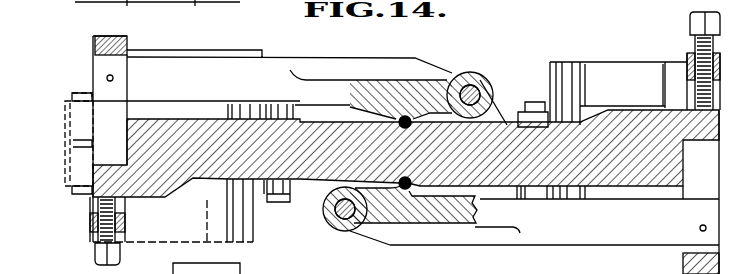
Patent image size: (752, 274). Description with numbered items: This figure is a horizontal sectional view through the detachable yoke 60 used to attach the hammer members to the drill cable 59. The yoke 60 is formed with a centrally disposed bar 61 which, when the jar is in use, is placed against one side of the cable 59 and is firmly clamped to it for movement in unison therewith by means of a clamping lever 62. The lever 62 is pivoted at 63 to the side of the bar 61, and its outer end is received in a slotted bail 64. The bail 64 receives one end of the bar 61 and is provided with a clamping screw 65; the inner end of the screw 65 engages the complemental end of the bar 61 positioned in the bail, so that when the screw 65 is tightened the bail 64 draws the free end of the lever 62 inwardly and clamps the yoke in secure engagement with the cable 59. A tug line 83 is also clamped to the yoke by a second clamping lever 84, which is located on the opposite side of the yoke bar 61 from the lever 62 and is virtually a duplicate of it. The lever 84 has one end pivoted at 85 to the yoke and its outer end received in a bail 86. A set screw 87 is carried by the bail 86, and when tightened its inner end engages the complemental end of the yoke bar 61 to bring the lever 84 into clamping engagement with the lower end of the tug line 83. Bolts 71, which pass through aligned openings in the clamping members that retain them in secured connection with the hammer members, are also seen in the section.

The drill cable 59 is at (403, 189).
The detachable yoke 60 is at (466, 63).
The bar 61 is at (584, 187).
The clamping lever 62 is at (543, 240).
The pivot 63 is at (328, 218).
The slotted bail 64 is at (684, 268).
The clamping screw 65 is at (693, 46).
The bolts 71 is at (78, 95).
The tug line 83 is at (407, 117).
The second clamping lever 84 is at (322, 72).
The pivot 85 is at (480, 80).
The bail 86 is at (93, 42).
The set screw 87 is at (92, 236).